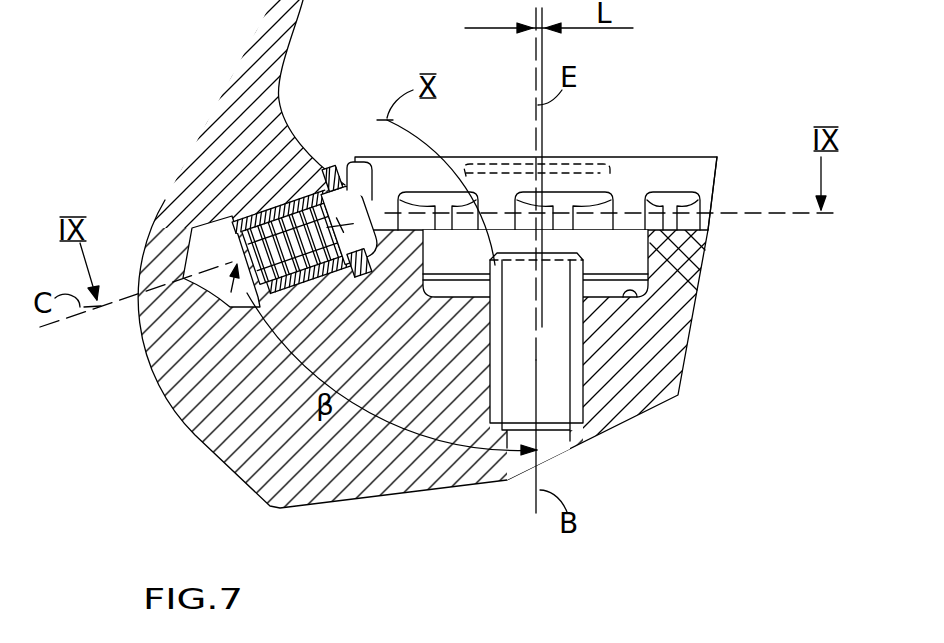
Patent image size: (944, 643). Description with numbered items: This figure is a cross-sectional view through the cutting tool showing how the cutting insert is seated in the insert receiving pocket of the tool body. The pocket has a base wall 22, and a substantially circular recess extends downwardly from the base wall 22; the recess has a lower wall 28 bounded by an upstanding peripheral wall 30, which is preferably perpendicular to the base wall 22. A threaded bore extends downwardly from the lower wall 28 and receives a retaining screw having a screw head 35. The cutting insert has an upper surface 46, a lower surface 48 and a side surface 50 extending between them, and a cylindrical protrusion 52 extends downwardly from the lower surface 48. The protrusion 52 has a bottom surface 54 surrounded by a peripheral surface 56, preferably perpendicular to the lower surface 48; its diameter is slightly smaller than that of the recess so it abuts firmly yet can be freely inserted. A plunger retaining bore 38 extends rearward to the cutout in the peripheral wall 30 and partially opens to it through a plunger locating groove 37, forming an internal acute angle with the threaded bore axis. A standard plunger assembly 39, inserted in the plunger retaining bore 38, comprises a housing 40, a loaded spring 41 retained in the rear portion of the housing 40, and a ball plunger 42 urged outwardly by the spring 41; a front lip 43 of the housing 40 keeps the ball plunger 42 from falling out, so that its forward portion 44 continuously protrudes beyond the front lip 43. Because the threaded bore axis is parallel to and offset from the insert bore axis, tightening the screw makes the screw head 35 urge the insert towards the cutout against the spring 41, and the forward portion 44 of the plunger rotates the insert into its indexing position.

The base wall 22 is at (687, 216).
The lower wall 28 is at (600, 295).
The upstanding peripheral wall 30 is at (668, 265).
The screw head 35 is at (580, 158).
The plunger locating groove 37 is at (428, 300).
The plunger retaining bore 38 is at (143, 336).
The plunger assembly 39 is at (233, 200).
The housing 40 is at (163, 384).
The loaded spring 41 is at (193, 428).
The ball plunger 42 is at (330, 195).
The front lip 43 is at (363, 200).
The forward portion 44 is at (382, 213).
The upper surface 46 is at (688, 157).
The lower surface 48 is at (652, 262).
The side surface 50 is at (715, 177).
The cylindrical protrusion 52 is at (457, 257).
The bottom surface 54 is at (583, 365).
The peripheral surface 56 is at (655, 300).